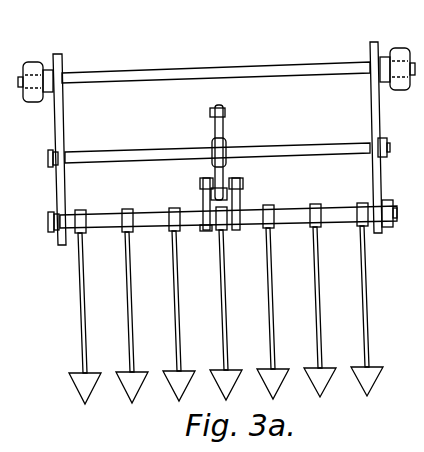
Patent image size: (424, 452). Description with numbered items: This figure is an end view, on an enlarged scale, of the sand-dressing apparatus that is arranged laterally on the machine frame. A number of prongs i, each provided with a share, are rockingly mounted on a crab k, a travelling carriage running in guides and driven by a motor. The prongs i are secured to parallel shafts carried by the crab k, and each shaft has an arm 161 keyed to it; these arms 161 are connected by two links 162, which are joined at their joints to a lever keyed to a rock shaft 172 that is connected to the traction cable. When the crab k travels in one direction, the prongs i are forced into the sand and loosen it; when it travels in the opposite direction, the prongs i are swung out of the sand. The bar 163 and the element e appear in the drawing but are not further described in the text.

The crab k is at (57, 121).
The rock shaft 172 is at (219, 147).
The links 162 is at (242, 180).
The arm 161 is at (238, 198).
The tooth bar 163 is at (158, 222).
The prongs i is at (372, 376).
The element e is at (419, 388).